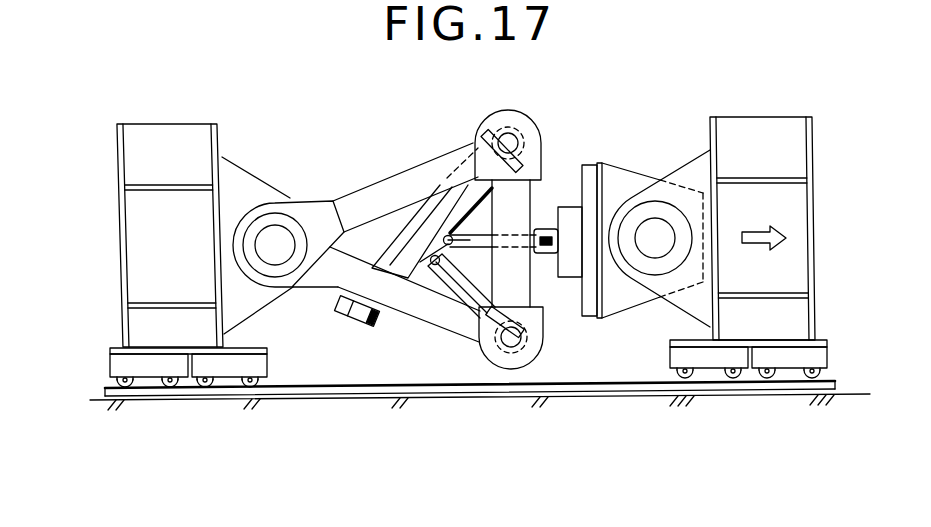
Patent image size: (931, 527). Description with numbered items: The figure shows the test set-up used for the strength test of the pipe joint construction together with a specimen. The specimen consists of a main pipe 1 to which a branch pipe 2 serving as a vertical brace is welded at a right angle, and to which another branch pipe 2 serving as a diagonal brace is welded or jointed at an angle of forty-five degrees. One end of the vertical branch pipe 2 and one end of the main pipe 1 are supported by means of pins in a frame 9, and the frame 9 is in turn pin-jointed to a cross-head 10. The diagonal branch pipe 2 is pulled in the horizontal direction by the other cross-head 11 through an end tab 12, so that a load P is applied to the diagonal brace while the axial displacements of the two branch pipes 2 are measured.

The main pipe 1 is at (382, 253).
The branch pipe 2 is at (467, 247).
The frame 9 is at (393, 180).
The cross-head 10 is at (175, 235).
The cross-head 11 is at (774, 158).
The end tab 12 is at (608, 163).